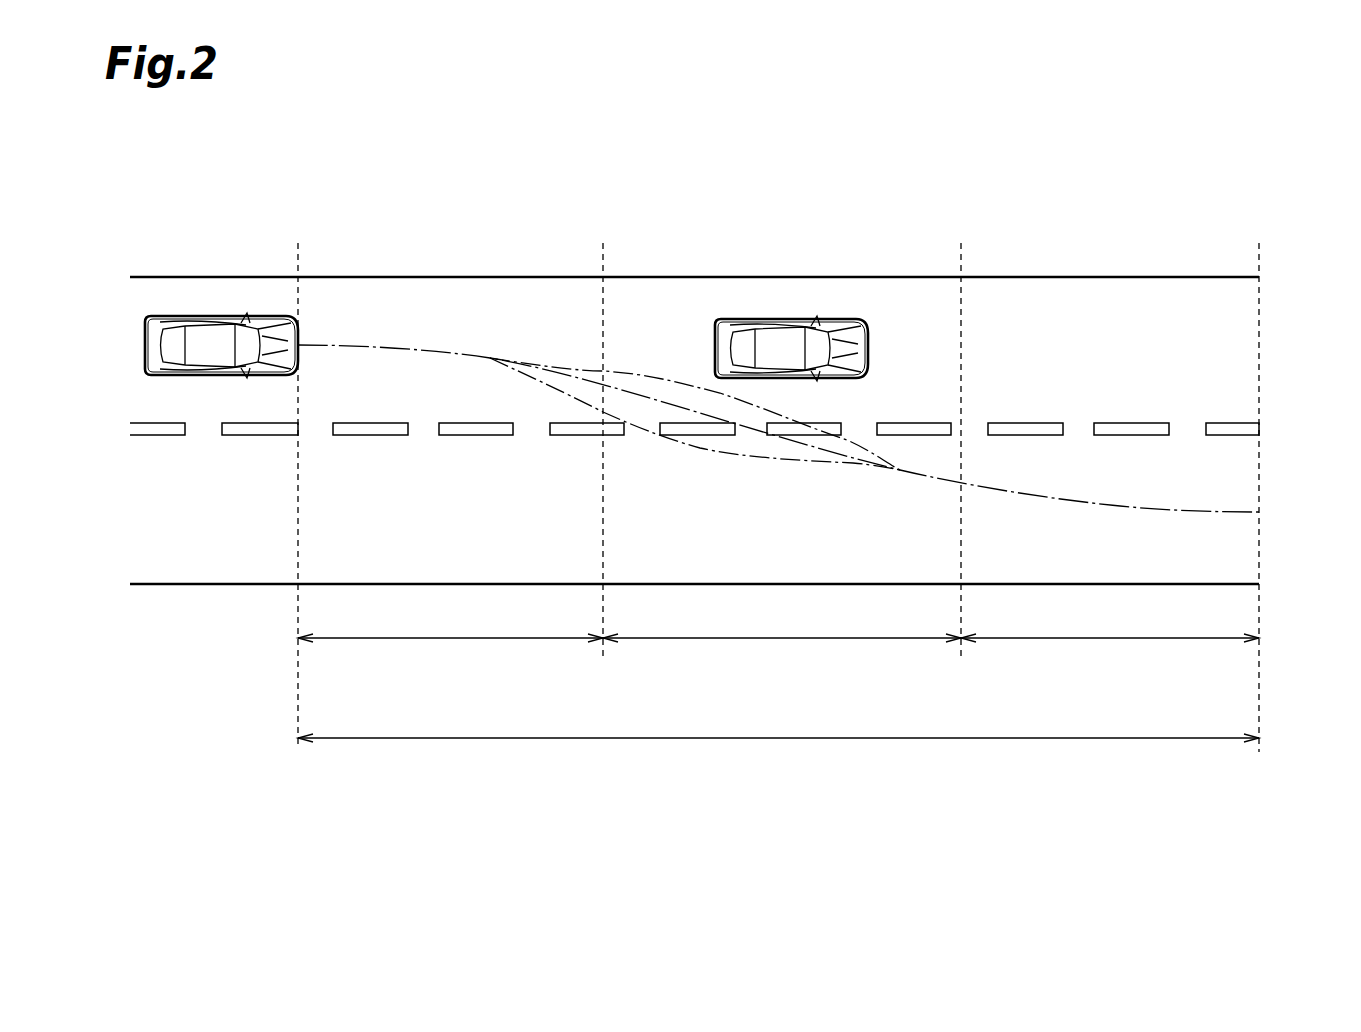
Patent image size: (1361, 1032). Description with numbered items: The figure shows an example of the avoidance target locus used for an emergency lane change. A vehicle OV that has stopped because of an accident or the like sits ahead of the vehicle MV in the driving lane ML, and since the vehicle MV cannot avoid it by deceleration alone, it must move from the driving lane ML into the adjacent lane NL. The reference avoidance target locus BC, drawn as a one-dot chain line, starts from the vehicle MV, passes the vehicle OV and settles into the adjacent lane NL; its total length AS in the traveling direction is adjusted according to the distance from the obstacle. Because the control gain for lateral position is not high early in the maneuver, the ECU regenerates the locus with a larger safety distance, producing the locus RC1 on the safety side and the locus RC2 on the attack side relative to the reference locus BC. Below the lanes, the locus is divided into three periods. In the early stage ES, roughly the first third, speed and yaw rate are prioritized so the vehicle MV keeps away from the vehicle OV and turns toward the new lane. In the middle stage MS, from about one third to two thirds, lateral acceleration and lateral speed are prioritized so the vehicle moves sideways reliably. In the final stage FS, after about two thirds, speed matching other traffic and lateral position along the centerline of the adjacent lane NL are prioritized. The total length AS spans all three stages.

The vehicle MV is at (218, 317).
The vehicle OV is at (785, 321).
The avoidance target locus for lane change RC1 is at (765, 455).
The avoidance target locus for lane change RC2 is at (650, 373).
The avoidance target locus for lane change BC is at (1080, 503).
The driving lane ML is at (1240, 362).
The adjacent lane NL is at (1240, 483).
The early stage ES is at (443, 640).
The middle stage MS is at (785, 640).
The final stage FS is at (1115, 640).
The total length AS is at (785, 740).